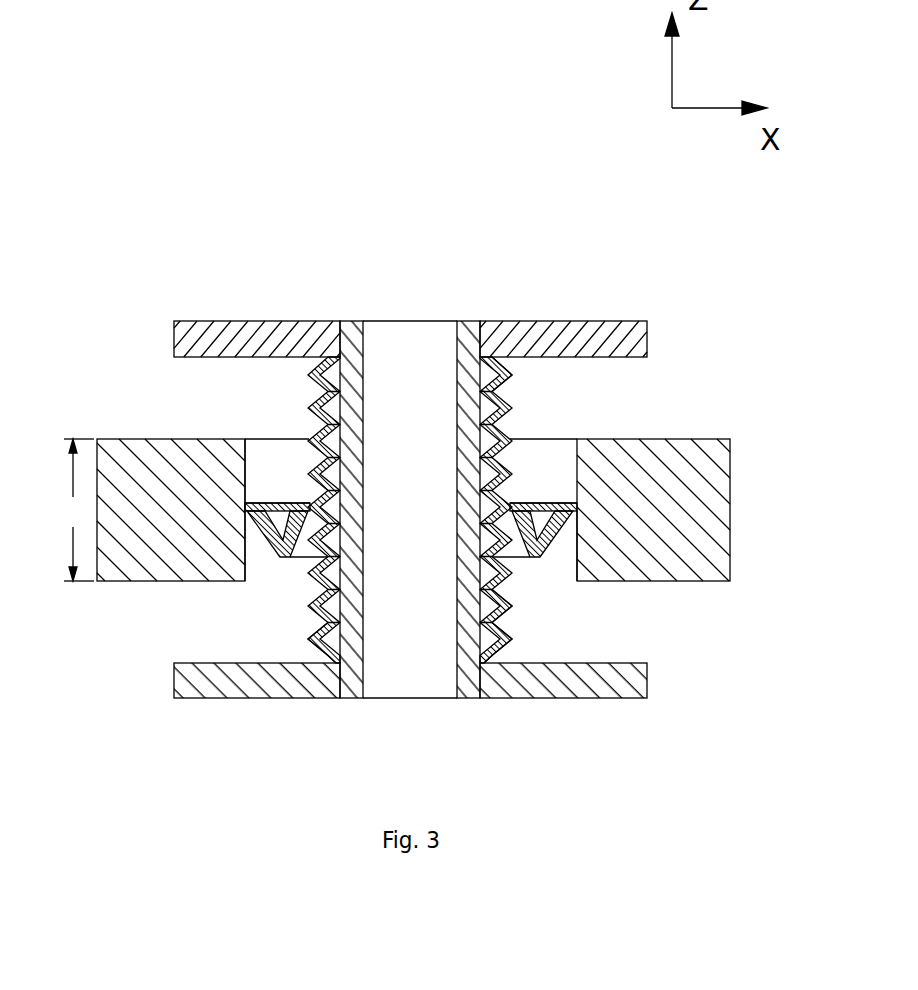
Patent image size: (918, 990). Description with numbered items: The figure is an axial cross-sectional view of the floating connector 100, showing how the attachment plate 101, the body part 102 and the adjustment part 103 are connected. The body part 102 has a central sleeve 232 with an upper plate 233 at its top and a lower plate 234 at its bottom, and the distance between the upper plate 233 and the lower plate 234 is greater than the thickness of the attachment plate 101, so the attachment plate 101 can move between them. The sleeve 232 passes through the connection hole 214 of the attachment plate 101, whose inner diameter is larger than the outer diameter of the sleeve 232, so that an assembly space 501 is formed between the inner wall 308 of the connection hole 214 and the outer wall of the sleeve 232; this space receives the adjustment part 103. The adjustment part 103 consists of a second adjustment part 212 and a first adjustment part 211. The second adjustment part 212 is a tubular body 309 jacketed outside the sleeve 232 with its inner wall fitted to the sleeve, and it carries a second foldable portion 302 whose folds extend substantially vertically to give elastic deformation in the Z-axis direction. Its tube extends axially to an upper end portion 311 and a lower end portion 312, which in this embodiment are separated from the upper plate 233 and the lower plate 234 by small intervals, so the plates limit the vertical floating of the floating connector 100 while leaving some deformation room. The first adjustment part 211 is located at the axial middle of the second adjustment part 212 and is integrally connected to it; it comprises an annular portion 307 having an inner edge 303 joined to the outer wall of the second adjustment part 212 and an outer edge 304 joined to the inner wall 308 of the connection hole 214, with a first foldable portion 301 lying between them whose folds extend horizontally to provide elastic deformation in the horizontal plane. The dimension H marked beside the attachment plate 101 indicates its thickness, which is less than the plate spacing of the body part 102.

The floating connector 100 is at (152, 114).
The attachment plate 101 is at (724, 527).
The body part 102 is at (250, 346).
The adjustment part 103 is at (515, 412).
The first adjustment part 211 is at (272, 540).
The second adjustment part 212 is at (508, 623).
The connection hole 214 is at (257, 440).
The sleeve 232 is at (352, 404).
The upper plate 233 is at (622, 322).
The lower plate 234 is at (643, 680).
The first foldable portion 301 is at (543, 503).
The second foldable portion 302 is at (510, 594).
The inner edge 303 is at (312, 502).
The outer edge 304 is at (578, 507).
The annular portion 307 is at (291, 559).
The inner wall 308 is at (248, 527).
The tubular body 309 is at (333, 378).
The upper end portion 311 is at (518, 374).
The lower end portion 312 is at (313, 653).
The assembly space 501 is at (562, 576).
The height H is at (77, 510).